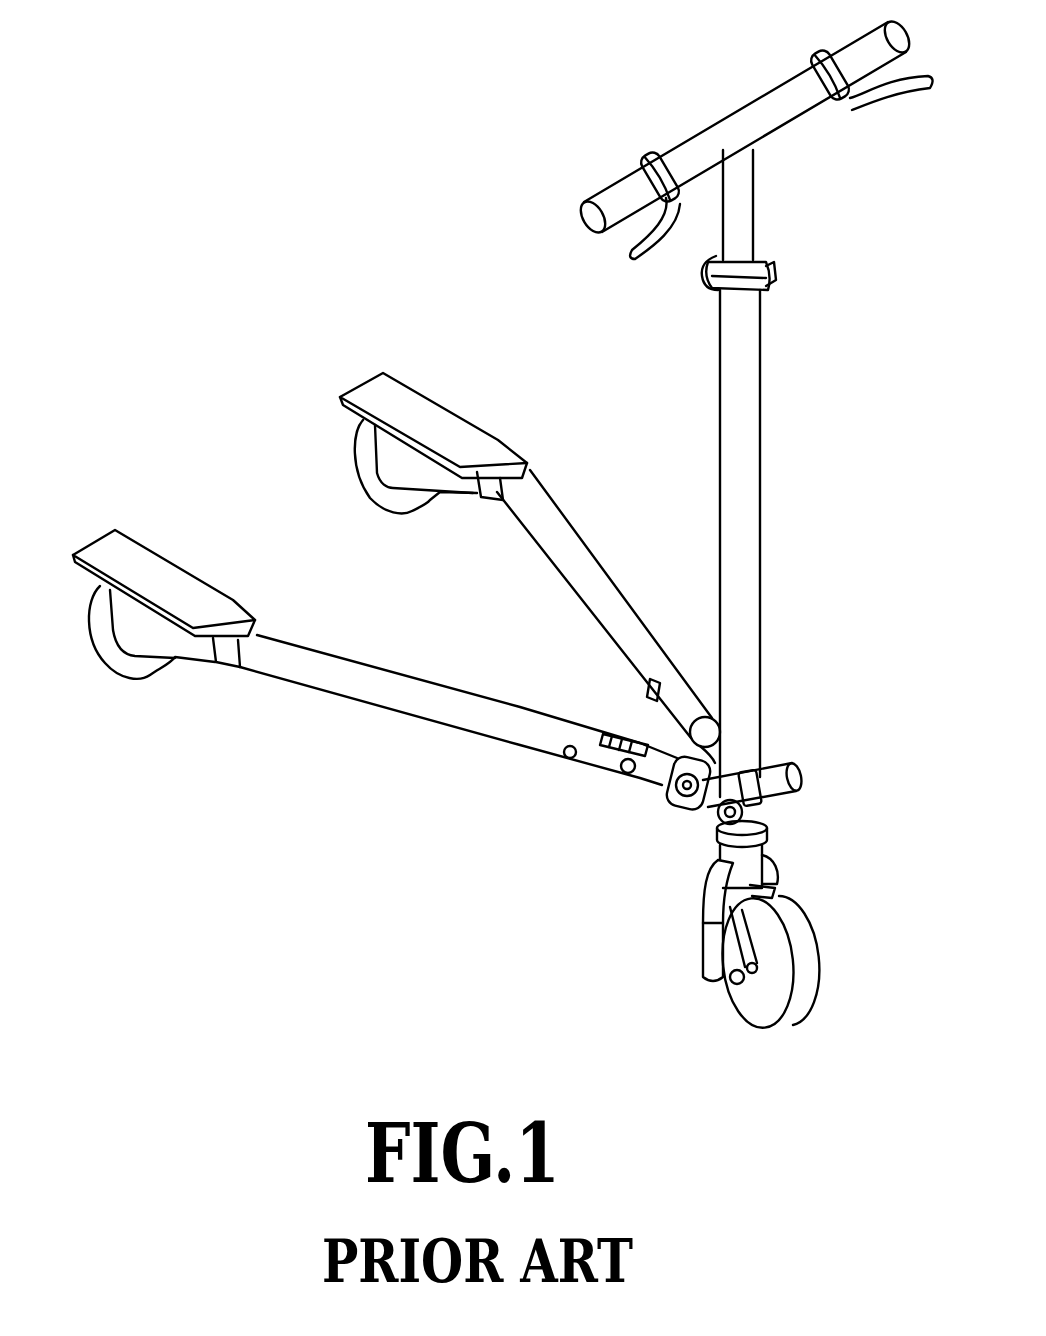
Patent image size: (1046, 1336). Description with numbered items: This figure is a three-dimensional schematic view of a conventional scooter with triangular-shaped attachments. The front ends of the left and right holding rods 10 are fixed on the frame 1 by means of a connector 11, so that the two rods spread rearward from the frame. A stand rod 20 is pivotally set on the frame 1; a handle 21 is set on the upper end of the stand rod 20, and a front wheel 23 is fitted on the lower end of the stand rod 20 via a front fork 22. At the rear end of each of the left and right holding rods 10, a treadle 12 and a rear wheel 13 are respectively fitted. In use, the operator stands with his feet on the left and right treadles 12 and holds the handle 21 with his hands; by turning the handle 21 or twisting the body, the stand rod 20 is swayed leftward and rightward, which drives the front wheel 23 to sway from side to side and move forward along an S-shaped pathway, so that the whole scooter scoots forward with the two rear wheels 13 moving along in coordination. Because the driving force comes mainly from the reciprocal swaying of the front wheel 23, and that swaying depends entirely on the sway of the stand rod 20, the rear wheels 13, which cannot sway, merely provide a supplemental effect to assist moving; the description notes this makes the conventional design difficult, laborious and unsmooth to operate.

The frame 1 is at (752, 413).
The holding rods 10 is at (557, 515).
The connector 11 is at (709, 731).
The treadle 12 is at (450, 423).
The rear wheel 13 is at (400, 497).
The stand rod 20 is at (743, 207).
The handle 21 is at (780, 107).
The front fork 22 is at (773, 878).
The front wheel 23 is at (816, 963).